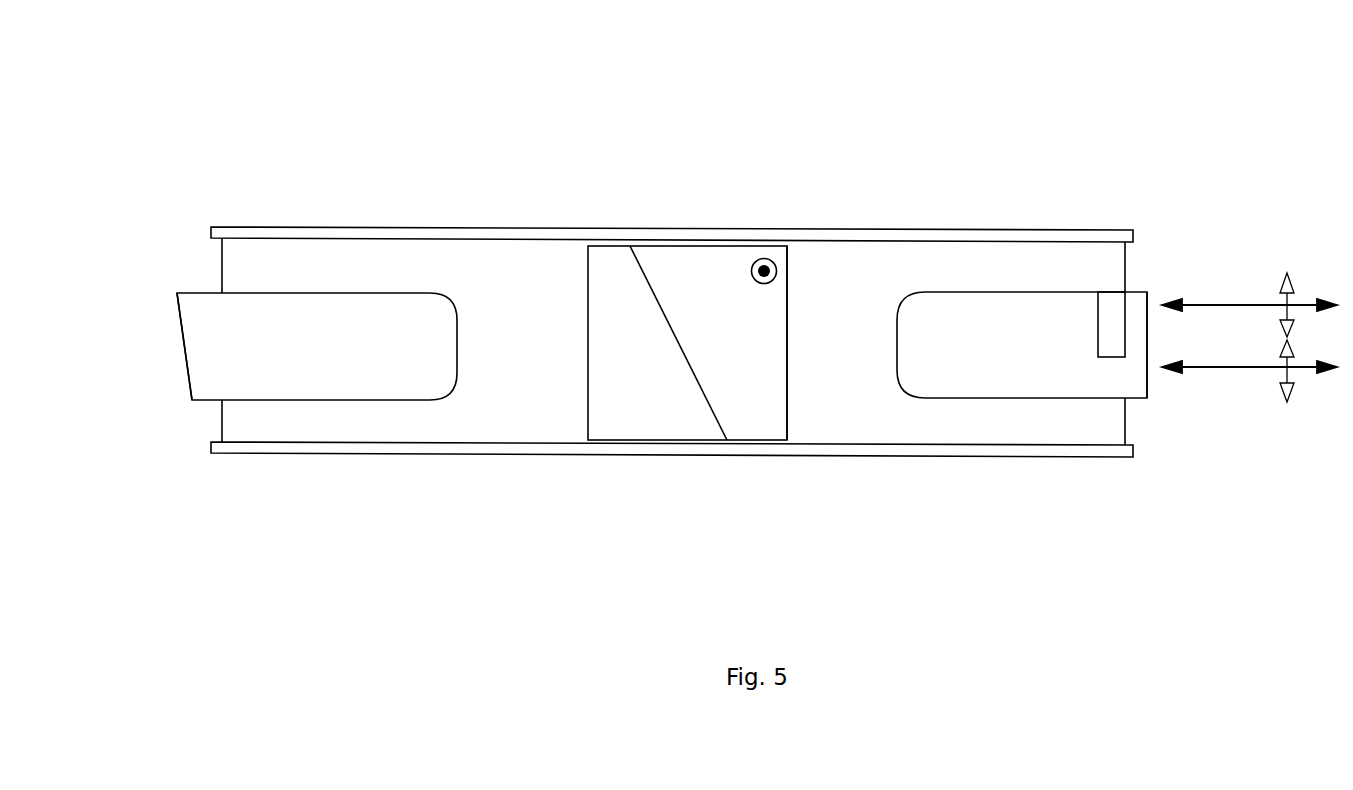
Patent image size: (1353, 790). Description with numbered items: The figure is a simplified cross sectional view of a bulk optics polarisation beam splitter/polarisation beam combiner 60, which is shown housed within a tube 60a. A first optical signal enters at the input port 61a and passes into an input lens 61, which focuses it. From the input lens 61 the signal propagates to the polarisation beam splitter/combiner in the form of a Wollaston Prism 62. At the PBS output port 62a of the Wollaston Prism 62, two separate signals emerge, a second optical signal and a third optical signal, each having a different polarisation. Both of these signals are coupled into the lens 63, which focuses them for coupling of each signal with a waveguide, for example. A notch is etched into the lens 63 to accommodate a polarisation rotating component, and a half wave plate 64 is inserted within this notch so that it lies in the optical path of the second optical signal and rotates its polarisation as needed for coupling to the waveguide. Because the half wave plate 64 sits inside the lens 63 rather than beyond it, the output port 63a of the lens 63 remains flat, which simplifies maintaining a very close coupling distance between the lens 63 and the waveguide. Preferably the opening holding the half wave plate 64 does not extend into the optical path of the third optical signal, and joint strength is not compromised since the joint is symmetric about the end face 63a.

The polarisation beam splitter/polarisation beam combiner 60 is at (283, 223).
The tube 60a is at (377, 445).
The input lens 61 is at (362, 307).
The input port 61a is at (188, 360).
The Wollaston Prism 62 is at (753, 255).
The PBS output port 62a is at (790, 290).
The lens 63 is at (1022, 383).
The output port 63a is at (1148, 384).
The half wave plate 64 is at (1110, 292).